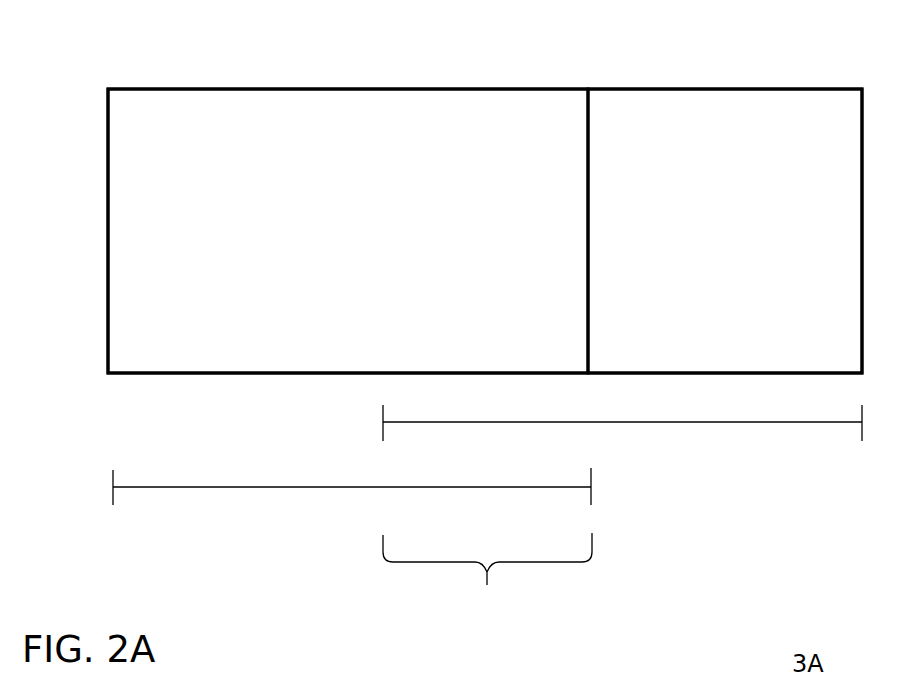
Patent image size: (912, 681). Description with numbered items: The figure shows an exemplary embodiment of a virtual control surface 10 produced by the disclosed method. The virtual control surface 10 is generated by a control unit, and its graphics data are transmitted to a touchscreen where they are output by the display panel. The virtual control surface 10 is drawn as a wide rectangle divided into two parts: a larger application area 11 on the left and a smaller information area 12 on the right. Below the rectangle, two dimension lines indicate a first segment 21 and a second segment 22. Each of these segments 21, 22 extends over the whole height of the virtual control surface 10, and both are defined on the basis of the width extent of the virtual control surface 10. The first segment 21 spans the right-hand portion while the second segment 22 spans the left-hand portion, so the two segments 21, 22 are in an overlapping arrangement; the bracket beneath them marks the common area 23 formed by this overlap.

The virtual control surface 10 is at (818, 84).
The application area 11 is at (363, 248).
The information area 12 is at (743, 248).
The first segment 21 is at (619, 423).
The second segment 22 is at (208, 487).
The common area 23 is at (487, 577).